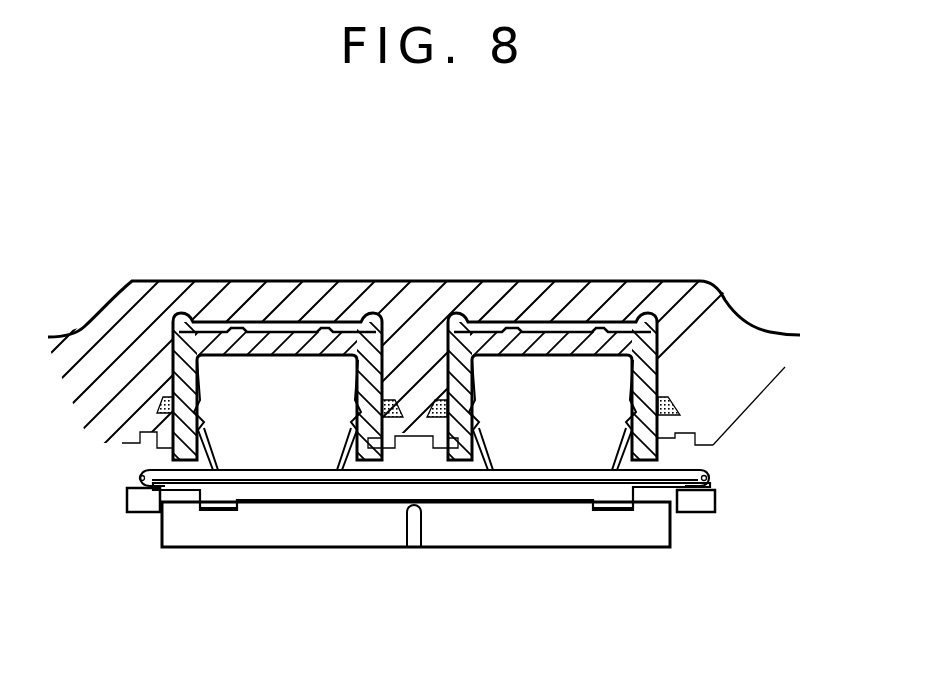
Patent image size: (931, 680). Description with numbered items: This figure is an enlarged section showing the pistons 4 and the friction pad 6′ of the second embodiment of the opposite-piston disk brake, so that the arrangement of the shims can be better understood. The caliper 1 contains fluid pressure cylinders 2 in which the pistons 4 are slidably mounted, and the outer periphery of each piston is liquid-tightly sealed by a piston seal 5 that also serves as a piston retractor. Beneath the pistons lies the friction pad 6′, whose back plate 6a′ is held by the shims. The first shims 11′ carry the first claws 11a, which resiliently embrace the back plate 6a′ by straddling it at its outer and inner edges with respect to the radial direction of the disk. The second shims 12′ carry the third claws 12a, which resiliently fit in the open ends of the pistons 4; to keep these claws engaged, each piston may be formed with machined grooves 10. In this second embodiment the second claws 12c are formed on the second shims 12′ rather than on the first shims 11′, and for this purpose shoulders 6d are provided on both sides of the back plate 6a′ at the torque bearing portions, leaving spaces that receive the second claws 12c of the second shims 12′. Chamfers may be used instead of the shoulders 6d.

The caliper 1 is at (518, 292).
The fluid pressure cylinders 2 is at (640, 318).
The pistons 4 is at (703, 281).
The piston seals 5 is at (710, 370).
The machined grooves 10 is at (137, 285).
The third claws 12a is at (213, 447).
The second claws 12c is at (140, 474).
The second shims 12′ is at (722, 468).
The shoulders 6d is at (127, 488).
The friction pad 6′ is at (575, 560).
The back plates 6a′ is at (261, 490).
The first claws 11a is at (617, 488).
The first shims 11′ is at (707, 513).